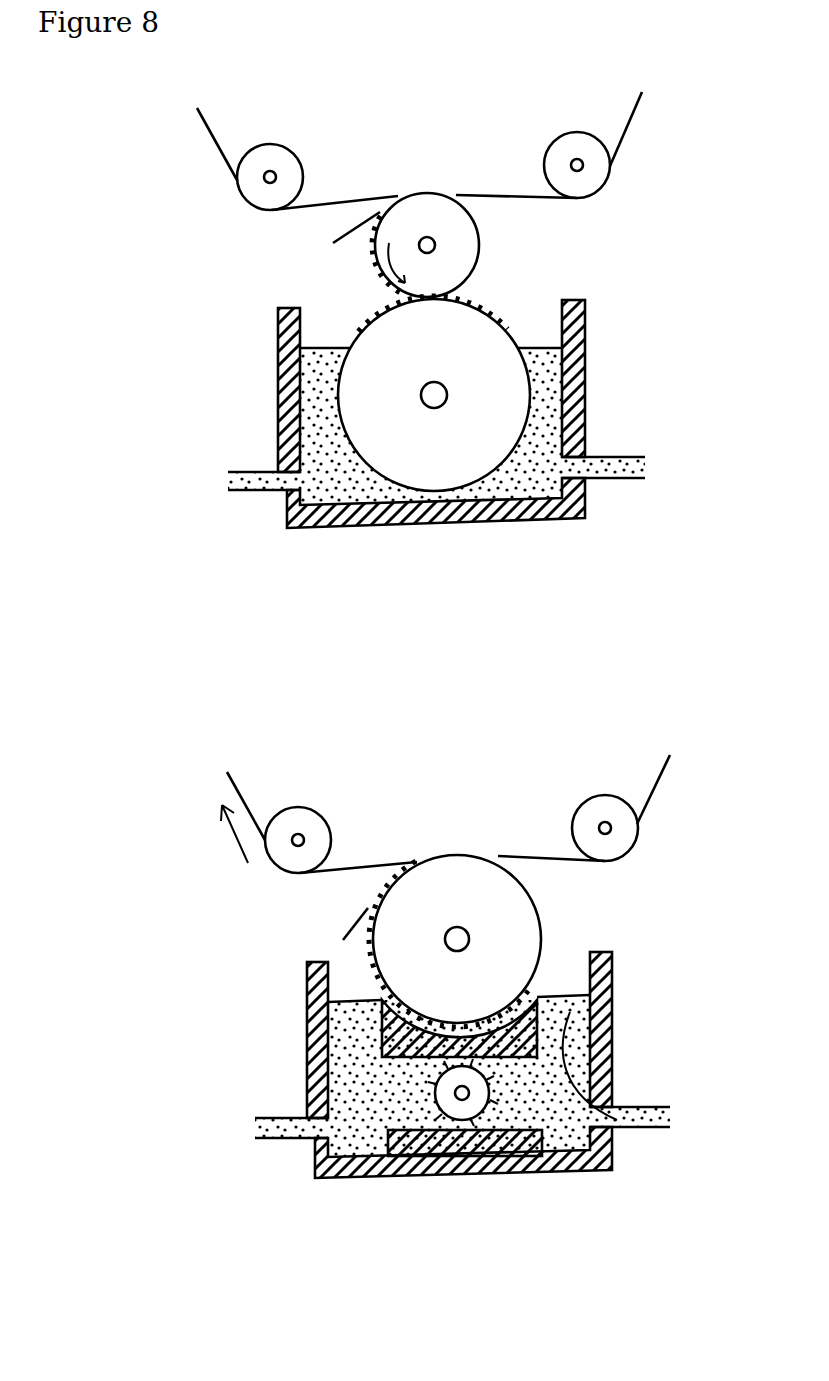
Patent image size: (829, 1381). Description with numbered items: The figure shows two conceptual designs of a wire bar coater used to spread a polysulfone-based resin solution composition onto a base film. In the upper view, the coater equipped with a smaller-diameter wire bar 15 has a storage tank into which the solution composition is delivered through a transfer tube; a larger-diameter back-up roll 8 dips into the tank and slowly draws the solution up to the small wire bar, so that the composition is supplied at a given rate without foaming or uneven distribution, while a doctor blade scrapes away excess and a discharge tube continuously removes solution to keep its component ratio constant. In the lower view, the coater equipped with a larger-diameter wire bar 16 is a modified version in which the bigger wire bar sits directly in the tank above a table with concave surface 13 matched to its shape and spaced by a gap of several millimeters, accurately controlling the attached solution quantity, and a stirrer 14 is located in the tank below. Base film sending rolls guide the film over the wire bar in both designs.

The back-up roll 8 is at (487, 326).
The table with concave surface 13 is at (400, 1047).
The stirrer 14 is at (450, 1112).
The coater equipped with a smaller-diameter wire bar 15 is at (103, 160).
The coater equipped with a larger-diameter wire bar 16 is at (133, 820).